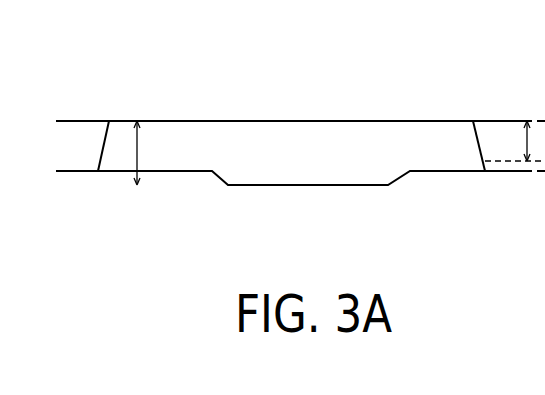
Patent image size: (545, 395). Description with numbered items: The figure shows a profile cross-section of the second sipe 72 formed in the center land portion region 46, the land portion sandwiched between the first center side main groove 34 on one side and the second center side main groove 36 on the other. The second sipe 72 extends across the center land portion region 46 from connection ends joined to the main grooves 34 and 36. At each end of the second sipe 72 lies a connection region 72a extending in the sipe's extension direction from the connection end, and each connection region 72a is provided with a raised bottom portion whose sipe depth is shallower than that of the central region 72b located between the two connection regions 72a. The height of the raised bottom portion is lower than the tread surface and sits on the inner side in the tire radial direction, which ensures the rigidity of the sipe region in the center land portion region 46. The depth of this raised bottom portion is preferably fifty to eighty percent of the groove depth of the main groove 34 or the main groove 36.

The second sipe 72 is at (438, 54).
The connection region 72a is at (185, 158).
The central region 72b is at (278, 168).
The first center side main groove 34 is at (88, 138).
The second center side main groove 36 is at (502, 138).
The center land portion region 46 is at (155, 113).